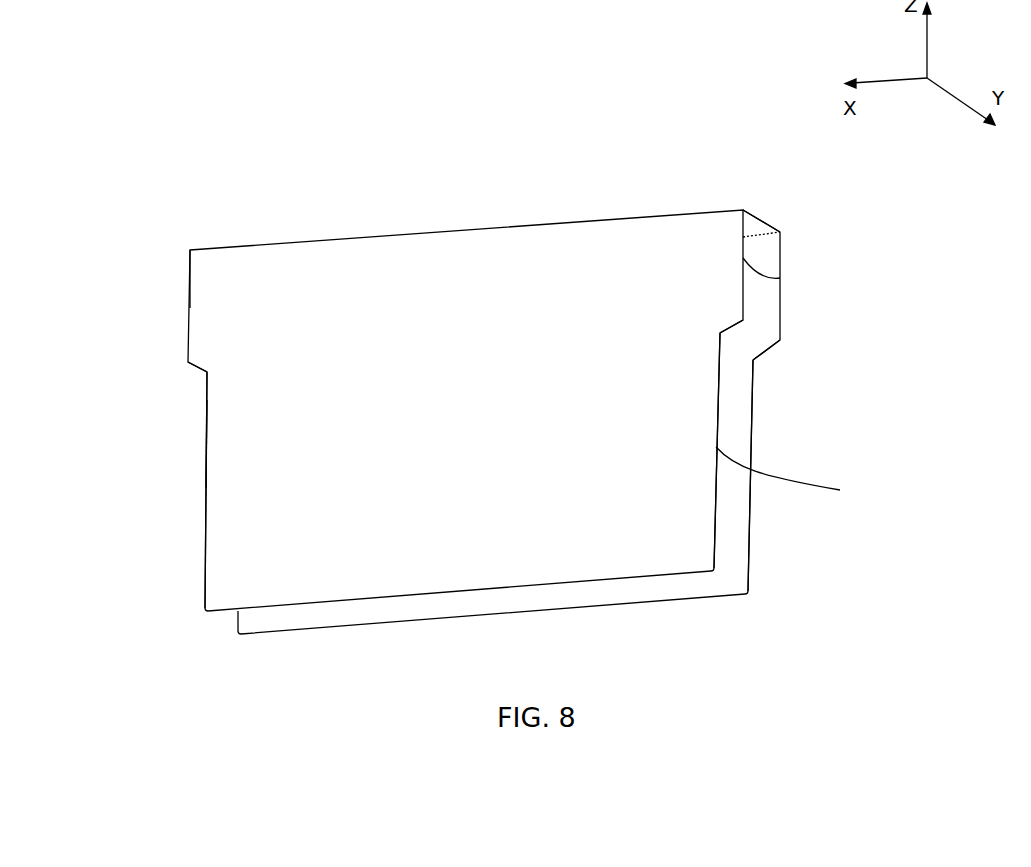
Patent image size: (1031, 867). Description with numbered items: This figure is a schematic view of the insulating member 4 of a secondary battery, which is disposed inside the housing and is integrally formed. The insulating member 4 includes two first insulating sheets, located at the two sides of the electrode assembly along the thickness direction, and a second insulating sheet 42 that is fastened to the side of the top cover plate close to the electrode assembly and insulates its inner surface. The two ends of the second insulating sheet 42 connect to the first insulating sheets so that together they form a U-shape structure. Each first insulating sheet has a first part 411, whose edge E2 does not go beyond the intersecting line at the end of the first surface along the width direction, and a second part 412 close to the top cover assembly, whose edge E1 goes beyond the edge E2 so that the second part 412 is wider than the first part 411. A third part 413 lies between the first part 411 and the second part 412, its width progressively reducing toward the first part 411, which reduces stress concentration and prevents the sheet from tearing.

The insulating member 4 is at (130, 134).
The second insulating sheet 42 is at (763, 222).
The second part 412 is at (373, 272).
The first part 411 is at (228, 522).
The third part 413 is at (200, 365).
The edge of the second part E1 is at (187, 308).
The edge of the first part E2 is at (205, 488).